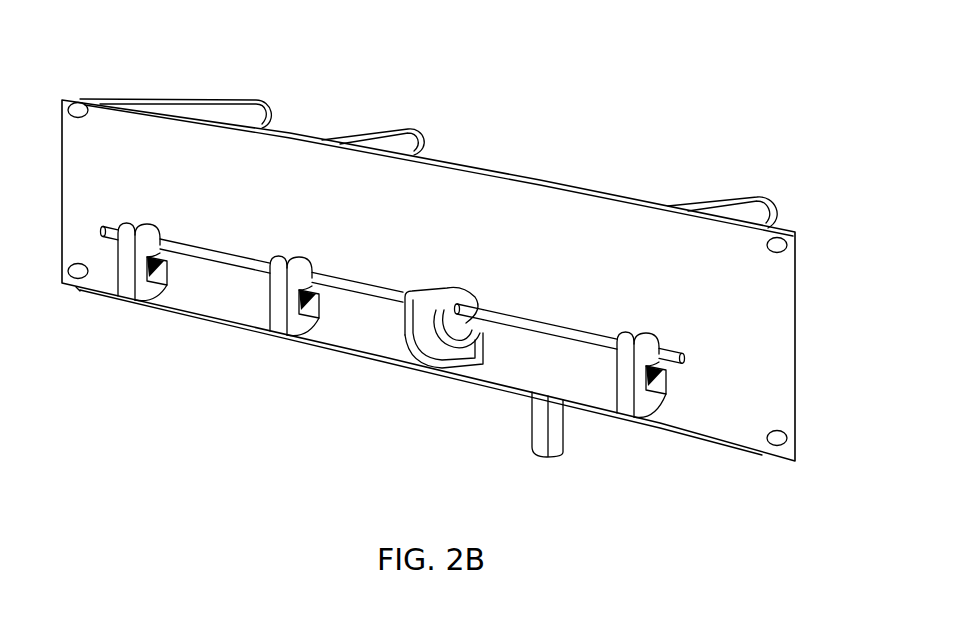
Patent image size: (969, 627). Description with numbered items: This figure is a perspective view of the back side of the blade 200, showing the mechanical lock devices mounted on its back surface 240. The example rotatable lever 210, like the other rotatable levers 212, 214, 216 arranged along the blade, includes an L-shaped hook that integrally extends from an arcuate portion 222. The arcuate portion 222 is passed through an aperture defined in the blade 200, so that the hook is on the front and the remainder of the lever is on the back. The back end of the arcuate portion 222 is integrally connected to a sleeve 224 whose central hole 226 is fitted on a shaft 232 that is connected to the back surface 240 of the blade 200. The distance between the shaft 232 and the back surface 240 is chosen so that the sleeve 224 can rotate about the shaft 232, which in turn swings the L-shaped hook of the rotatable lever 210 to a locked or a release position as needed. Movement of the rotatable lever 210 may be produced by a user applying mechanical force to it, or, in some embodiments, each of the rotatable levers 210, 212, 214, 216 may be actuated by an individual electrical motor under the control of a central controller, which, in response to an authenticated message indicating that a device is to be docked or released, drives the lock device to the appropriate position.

The blade 200 is at (78, 64).
The rotatable lever 210 is at (165, 262).
The rotatable lever 212 is at (275, 325).
The rotatable lever 214 is at (553, 450).
The rotatable lever 216 is at (647, 410).
The arcuate portion 222 is at (164, 282).
The sleeve 224 is at (128, 226).
The central hole 226 is at (151, 228).
The shaft 232 is at (522, 324).
The back surface 240 is at (783, 353).